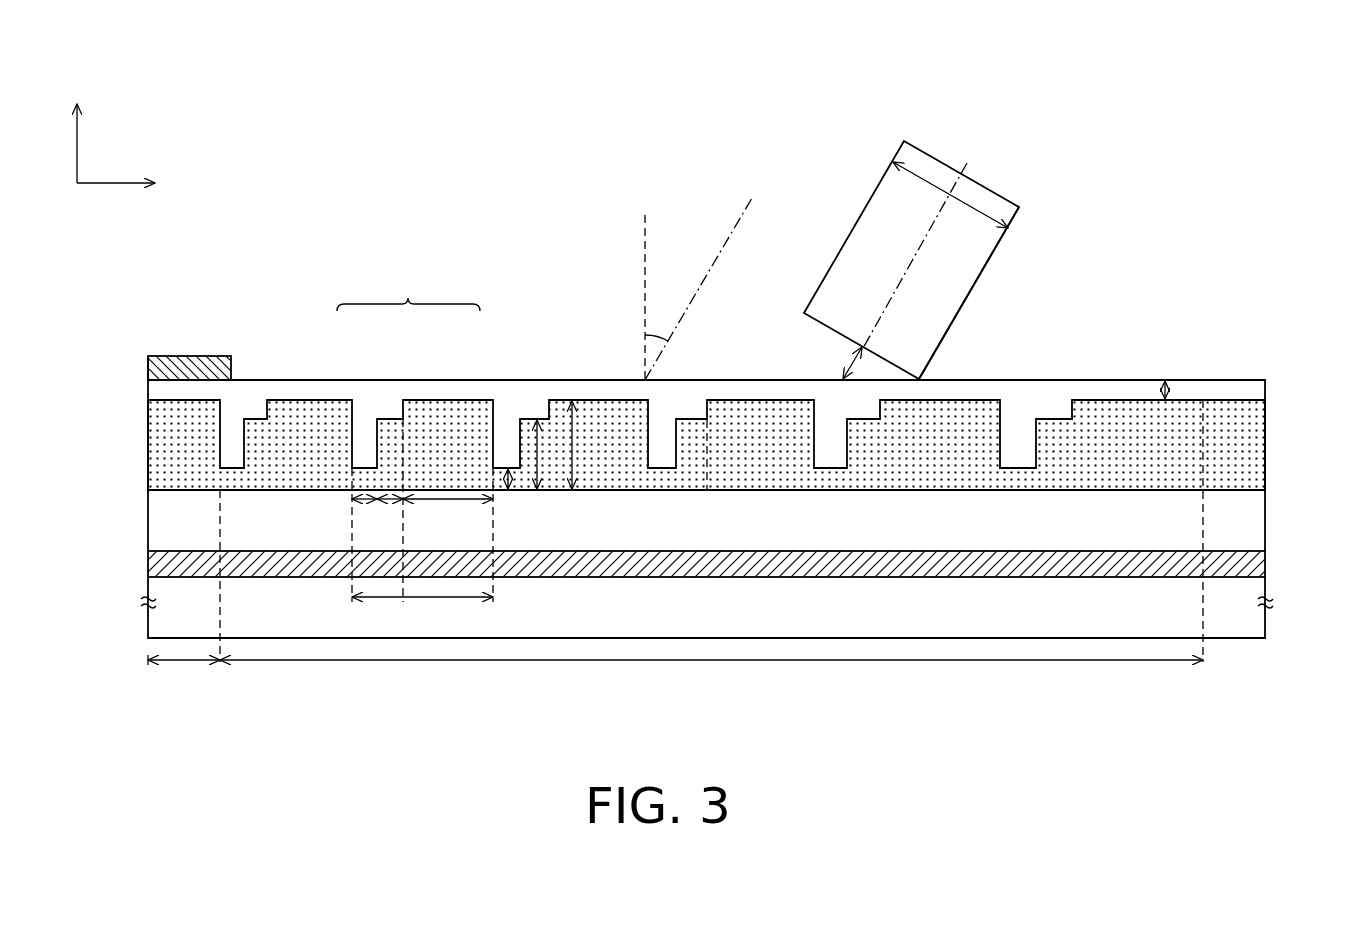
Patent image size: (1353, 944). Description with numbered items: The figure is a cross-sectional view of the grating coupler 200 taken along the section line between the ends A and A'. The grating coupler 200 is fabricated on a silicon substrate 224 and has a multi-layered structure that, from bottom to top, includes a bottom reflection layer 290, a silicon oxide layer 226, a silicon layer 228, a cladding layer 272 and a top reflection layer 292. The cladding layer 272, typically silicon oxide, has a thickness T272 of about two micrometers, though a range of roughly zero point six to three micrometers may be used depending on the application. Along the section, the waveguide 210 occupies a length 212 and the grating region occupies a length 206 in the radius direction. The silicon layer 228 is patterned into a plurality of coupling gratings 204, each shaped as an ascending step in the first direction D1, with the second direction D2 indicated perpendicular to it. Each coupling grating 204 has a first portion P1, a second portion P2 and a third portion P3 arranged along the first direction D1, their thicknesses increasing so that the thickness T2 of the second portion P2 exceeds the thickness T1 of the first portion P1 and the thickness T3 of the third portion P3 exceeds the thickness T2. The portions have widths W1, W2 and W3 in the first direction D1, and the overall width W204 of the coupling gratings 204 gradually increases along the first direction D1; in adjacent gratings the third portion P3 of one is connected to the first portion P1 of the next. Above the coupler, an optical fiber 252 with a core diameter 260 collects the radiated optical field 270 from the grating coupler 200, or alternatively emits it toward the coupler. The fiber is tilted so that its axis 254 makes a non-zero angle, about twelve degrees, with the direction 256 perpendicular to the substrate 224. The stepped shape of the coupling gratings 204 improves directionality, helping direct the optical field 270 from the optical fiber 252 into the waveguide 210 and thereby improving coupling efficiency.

The grating coupler 200 is at (150, 328).
The coupling grating 204 is at (408, 286).
The length of the grating region 206 is at (675, 662).
The waveguide 210 is at (160, 454).
The length of the waveguide 212 is at (197, 663).
The silicon substrate 224 is at (1253, 620).
The silicon oxide layer 226 is at (1253, 522).
The silicon layer 228 is at (1253, 448).
The optical fiber 252 is at (867, 235).
The axis of the optical fiber 254 is at (950, 179).
The direction perpendicular to the substrate 256 is at (645, 278).
The core diameter 260 is at (977, 198).
The radiated optical field 270 is at (848, 368).
The cladding layer 272 is at (1253, 392).
The bottom reflection layer 290 is at (1253, 562).
The top reflection layer 292 is at (160, 371).
The first portion P1 is at (370, 466).
The second portion P2 is at (388, 424).
The third portion P3 is at (450, 410).
The width of the first portion W1 is at (368, 504).
The width of the second portion W2 is at (392, 504).
The width of the third portion W3 is at (450, 504).
The width of the coupling grating W204 is at (422, 614).
The thickness of the first portion T1 is at (510, 494).
The thickness of the second portion T2 is at (542, 470).
The thickness of the third portion T3 is at (586, 440).
The thickness of the cladding layer T272 is at (1168, 390).
The first direction D1 is at (132, 182).
The second direction D2 is at (77, 125).
The section line end A is at (150, 683).
The section line end A' is at (1240, 686).